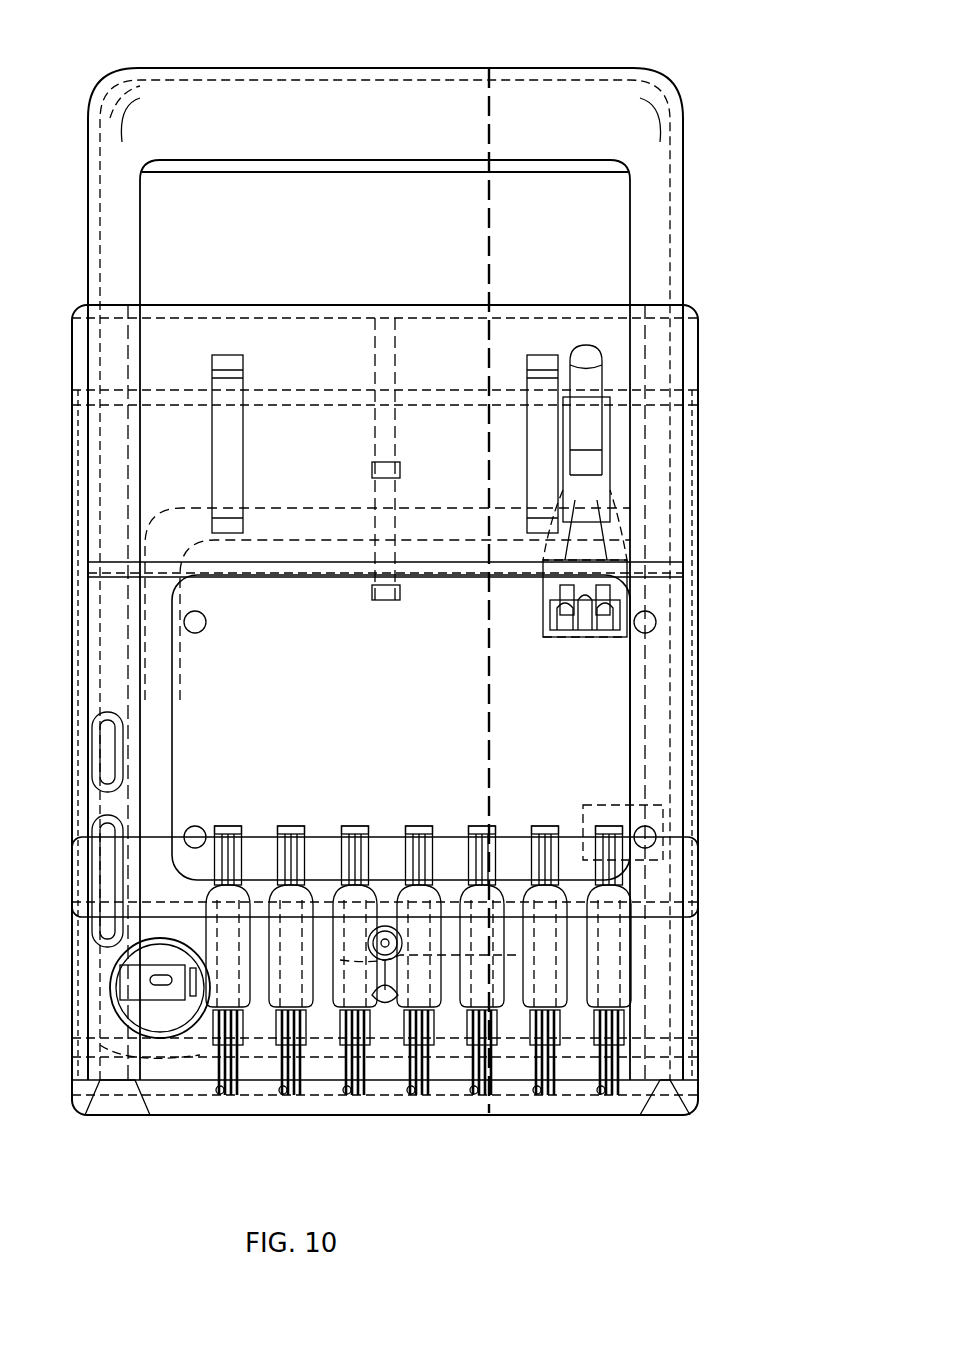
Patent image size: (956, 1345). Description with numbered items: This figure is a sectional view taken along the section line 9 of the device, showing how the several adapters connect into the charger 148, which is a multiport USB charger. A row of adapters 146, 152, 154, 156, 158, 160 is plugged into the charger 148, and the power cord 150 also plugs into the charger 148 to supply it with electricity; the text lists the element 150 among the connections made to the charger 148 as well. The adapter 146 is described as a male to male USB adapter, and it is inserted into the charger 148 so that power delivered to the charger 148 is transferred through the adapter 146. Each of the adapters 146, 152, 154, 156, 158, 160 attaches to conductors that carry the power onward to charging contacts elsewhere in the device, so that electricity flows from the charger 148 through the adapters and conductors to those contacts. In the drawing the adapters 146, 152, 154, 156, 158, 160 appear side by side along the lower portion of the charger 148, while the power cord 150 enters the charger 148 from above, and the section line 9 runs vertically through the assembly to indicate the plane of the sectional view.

The section line 9- 9 is at (489, 1113).
The adapter 146 is at (475, 995).
The charger 148 is at (598, 724).
The power cord 150 is at (600, 532).
The adapter 152 is at (283, 1000).
The adapter 154 is at (347, 1000).
The adapter 156 is at (412, 1000).
The adapter 158 is at (550, 990).
The adapter 160 is at (618, 985).